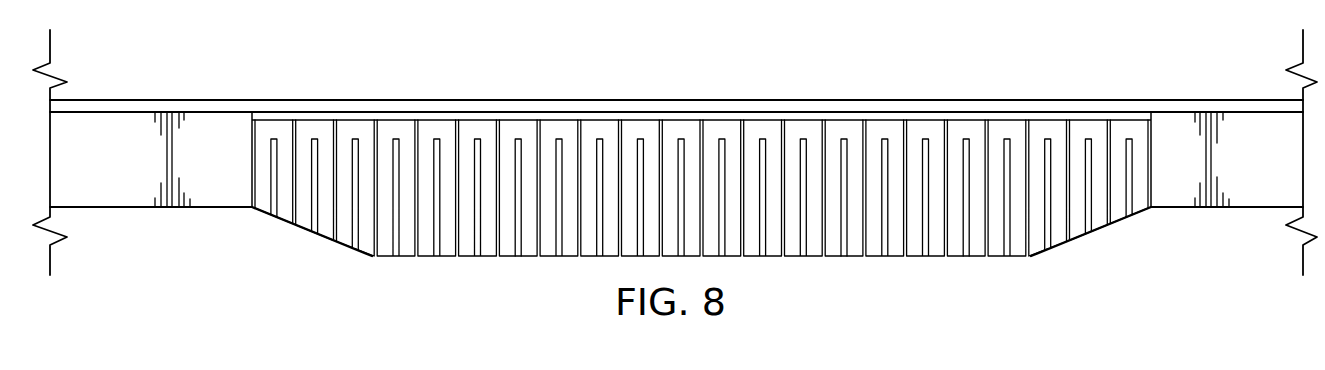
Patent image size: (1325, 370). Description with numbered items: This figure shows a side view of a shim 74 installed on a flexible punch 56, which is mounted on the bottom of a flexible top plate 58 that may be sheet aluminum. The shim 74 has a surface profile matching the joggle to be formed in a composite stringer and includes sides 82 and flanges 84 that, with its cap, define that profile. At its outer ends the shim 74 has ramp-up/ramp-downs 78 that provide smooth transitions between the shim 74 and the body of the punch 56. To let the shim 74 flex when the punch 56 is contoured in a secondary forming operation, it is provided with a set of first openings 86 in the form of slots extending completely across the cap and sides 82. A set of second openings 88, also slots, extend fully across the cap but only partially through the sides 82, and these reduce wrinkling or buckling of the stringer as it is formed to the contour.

The punch 56 is at (215, 197).
The top plate 58 is at (217, 100).
The flanges 84 is at (975, 115).
The shim 74 is at (425, 248).
The sides 82 is at (509, 245).
The second openings 88 is at (850, 242).
The first openings 86 is at (948, 244).
The ramp-up/ramp-downs 78 is at (322, 241).